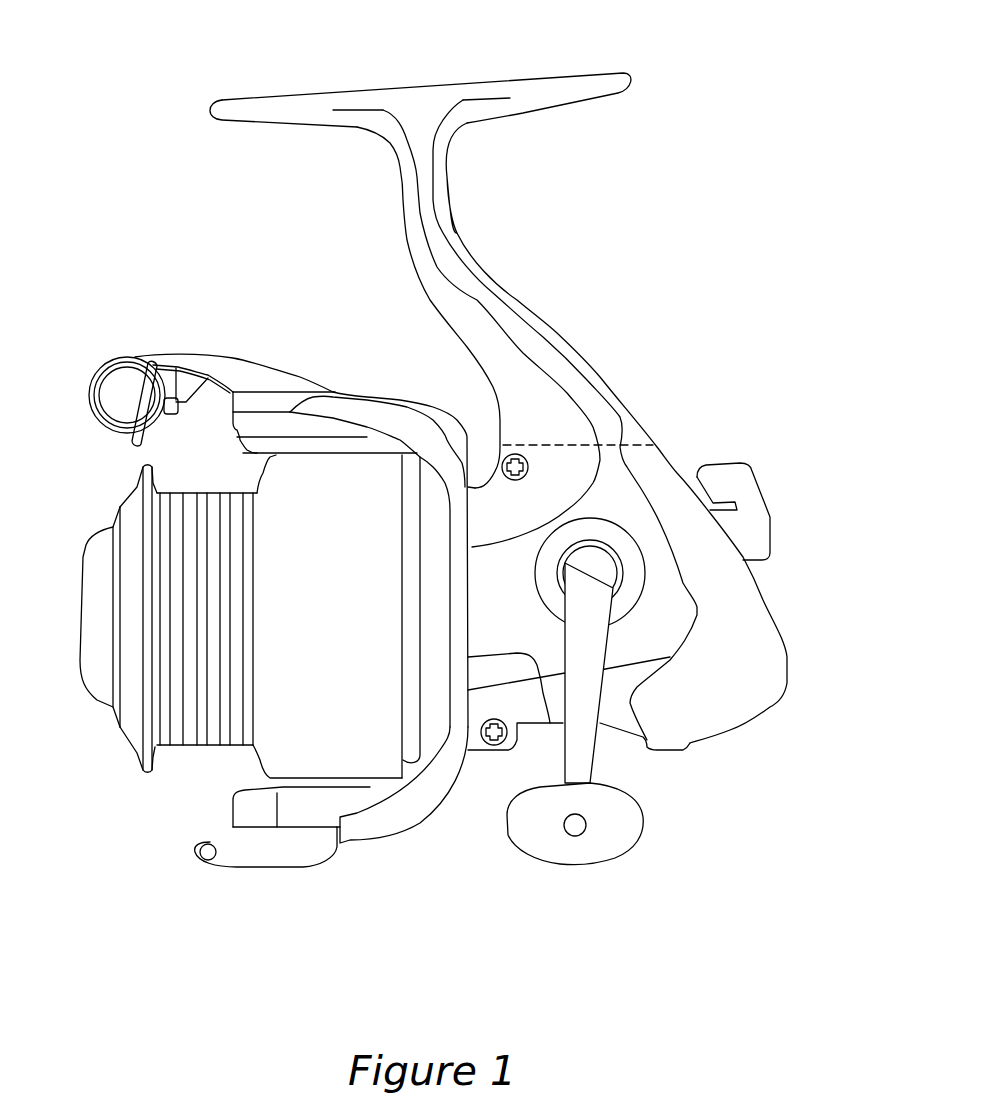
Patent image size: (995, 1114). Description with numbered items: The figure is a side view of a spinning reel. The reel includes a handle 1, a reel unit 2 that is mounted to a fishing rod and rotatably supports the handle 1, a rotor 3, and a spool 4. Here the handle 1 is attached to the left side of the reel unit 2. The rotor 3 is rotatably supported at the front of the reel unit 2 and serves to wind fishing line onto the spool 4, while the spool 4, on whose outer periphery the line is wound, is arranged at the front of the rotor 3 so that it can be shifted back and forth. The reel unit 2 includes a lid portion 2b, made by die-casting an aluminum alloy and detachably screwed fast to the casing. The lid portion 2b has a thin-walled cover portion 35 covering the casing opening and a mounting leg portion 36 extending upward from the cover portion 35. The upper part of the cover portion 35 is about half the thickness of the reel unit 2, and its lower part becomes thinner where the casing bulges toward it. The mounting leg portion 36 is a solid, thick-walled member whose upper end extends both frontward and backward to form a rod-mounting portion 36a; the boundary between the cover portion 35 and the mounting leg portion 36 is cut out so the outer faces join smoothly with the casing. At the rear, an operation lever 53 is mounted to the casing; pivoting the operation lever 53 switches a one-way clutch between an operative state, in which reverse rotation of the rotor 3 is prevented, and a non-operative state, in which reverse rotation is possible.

The handle 1 is at (600, 757).
The reel unit 2 is at (530, 267).
The lid portion 2b is at (547, 420).
The rotor 3 is at (423, 797).
The spool 4 is at (200, 723).
The cover portion 35 is at (633, 633).
The mounting leg portion 36 is at (550, 350).
The rod-mounting portion 36a is at (550, 93).
The operation lever 53 is at (723, 477).